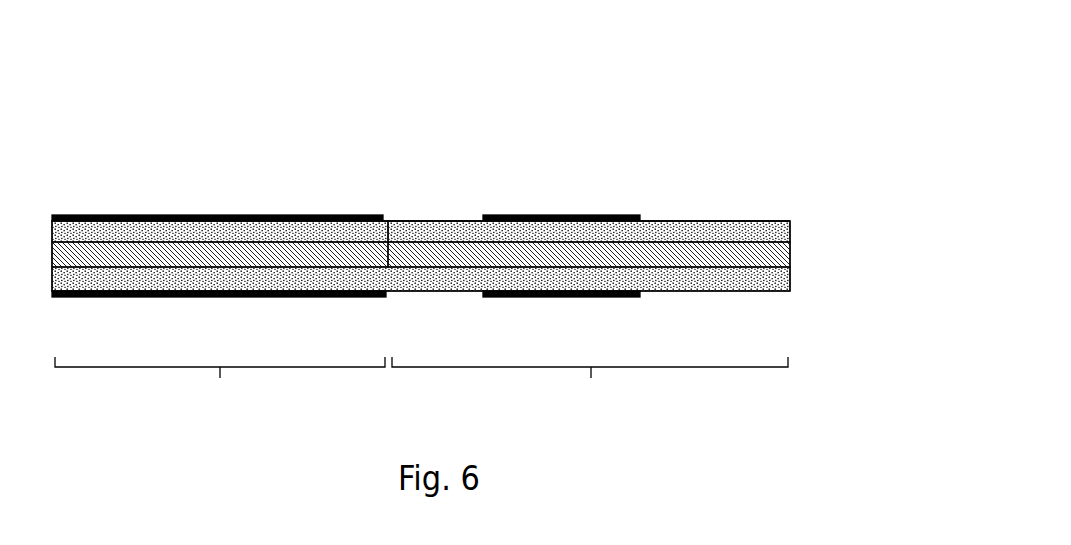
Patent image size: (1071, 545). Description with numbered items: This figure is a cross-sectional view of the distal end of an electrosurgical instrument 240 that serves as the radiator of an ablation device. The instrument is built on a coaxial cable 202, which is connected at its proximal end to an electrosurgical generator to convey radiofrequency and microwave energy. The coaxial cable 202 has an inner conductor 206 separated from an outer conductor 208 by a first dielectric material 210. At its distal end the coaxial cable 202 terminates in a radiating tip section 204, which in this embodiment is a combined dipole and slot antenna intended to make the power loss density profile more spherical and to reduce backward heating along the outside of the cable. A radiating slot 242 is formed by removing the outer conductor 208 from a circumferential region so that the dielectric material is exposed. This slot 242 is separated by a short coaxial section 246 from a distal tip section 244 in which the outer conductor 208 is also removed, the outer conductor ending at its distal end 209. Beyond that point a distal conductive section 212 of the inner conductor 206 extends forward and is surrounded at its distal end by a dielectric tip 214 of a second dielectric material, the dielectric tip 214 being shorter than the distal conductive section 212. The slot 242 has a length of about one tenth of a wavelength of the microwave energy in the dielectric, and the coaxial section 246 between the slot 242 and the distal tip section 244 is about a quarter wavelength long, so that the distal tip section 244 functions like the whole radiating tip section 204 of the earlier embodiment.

The electrosurgical instrument 240 is at (733, 108).
The coaxial cable 202 is at (220, 382).
The radiating tip section 204 is at (590, 382).
The inner conductor 206 is at (128, 257).
The distal conductive section 212 is at (710, 257).
The outer conductor 208 is at (209, 297).
The distal end of the outer conductor 209 is at (381, 213).
The first dielectric material 210 is at (190, 228).
The dielectric tip 214 is at (562, 232).
The radiating slot 242 is at (421, 219).
The distal tip section 244 is at (678, 219).
The coaxial section 246 is at (525, 215).